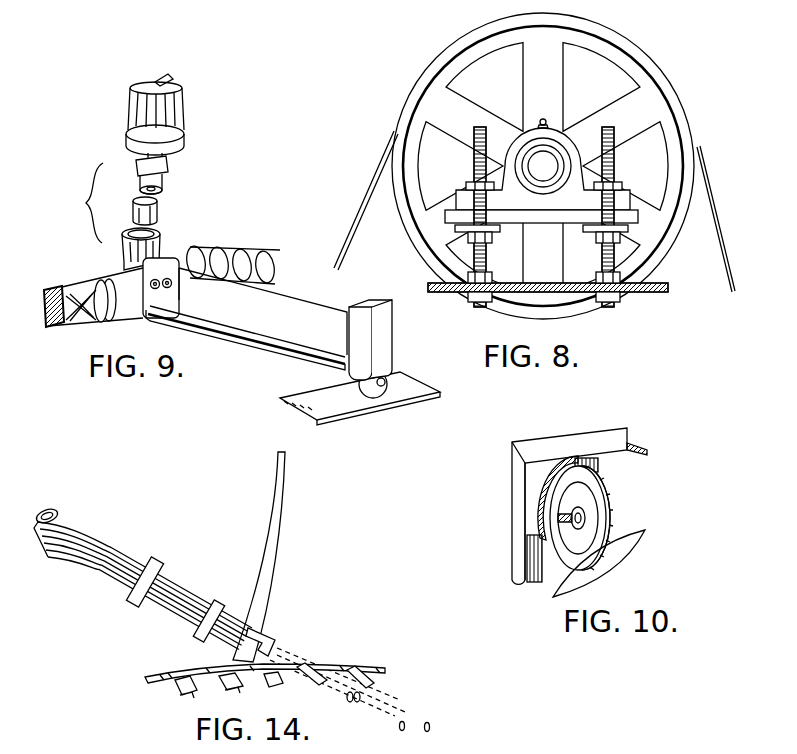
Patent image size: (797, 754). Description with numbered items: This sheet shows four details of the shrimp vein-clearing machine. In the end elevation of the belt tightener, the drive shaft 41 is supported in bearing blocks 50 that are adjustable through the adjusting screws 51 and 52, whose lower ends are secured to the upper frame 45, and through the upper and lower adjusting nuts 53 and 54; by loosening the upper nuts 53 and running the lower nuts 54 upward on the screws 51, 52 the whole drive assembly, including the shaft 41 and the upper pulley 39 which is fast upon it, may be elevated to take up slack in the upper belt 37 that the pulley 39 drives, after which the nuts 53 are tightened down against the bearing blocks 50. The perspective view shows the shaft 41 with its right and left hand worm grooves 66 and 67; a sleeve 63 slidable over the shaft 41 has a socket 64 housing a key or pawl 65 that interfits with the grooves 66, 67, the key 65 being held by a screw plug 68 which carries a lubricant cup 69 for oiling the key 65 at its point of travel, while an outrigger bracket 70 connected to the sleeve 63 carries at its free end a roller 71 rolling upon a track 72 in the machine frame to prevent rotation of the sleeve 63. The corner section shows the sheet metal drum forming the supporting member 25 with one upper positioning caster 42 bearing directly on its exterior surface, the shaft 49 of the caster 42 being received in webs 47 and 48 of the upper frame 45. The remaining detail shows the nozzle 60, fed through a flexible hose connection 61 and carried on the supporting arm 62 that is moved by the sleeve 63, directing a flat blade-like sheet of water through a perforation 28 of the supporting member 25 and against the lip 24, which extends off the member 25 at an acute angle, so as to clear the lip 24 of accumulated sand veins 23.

In FIG. 14, the sand vein 23 is at (396, 726).
In FIG. 14, the lip 24 is at (236, 692).
In FIG. 10, the supporting member 25 is at (645, 533).
In FIG. 14, the supporting member 25 is at (143, 679).
In FIG. 14, the perforation 28 is at (214, 668).
In FIG. 8, the upper belt 37 is at (728, 264).
In FIG. 8, the upper pulley 39 is at (663, 121).
In FIG. 8, the drive shaft 41 is at (548, 162).
In FIG. 9, the drive shaft 41 is at (42, 310).
In FIG. 10, the upper positioning caster 42 is at (607, 518).
In FIG. 8, the upper frame 45 is at (650, 292).
In FIG. 10, the upper frame 45 is at (628, 438).
In FIG. 10, the web 47 is at (527, 490).
In FIG. 10, the web 48 is at (598, 466).
In FIG. 10, the shaft 49 is at (580, 508).
In FIG. 8, the bearing 50 is at (553, 224).
In FIG. 8, the adjusting screw 51 is at (474, 158).
In FIG. 8, the adjusting screw 52 is at (614, 134).
In FIG. 8, the upper adjusting nut 53 is at (466, 188).
In FIG. 8, the lower adjusting nut 54 is at (492, 234).
In FIG. 14, the nozzle 60 is at (265, 632).
In FIG. 14, the flexible hose connection 61 is at (96, 548).
In FIG. 14, the supporting arm 62 is at (278, 496).
In FIG. 9, the sleeve 63 is at (120, 265).
In FIG. 9, the socket 64 is at (123, 243).
In FIG. 9, the key or pawl 65 is at (157, 213).
In FIG. 9, the worm groove 66 is at (68, 325).
In FIG. 9, the worm groove 67 is at (73, 287).
In FIG. 9, the screw plug 68 is at (136, 175).
In FIG. 9, the lubricant cup 69 is at (184, 120).
In FIG. 9, the outrigger bracket 70 is at (266, 316).
In FIG. 9, the roller 71 is at (380, 392).
In FIG. 9, the track 72 is at (283, 402).